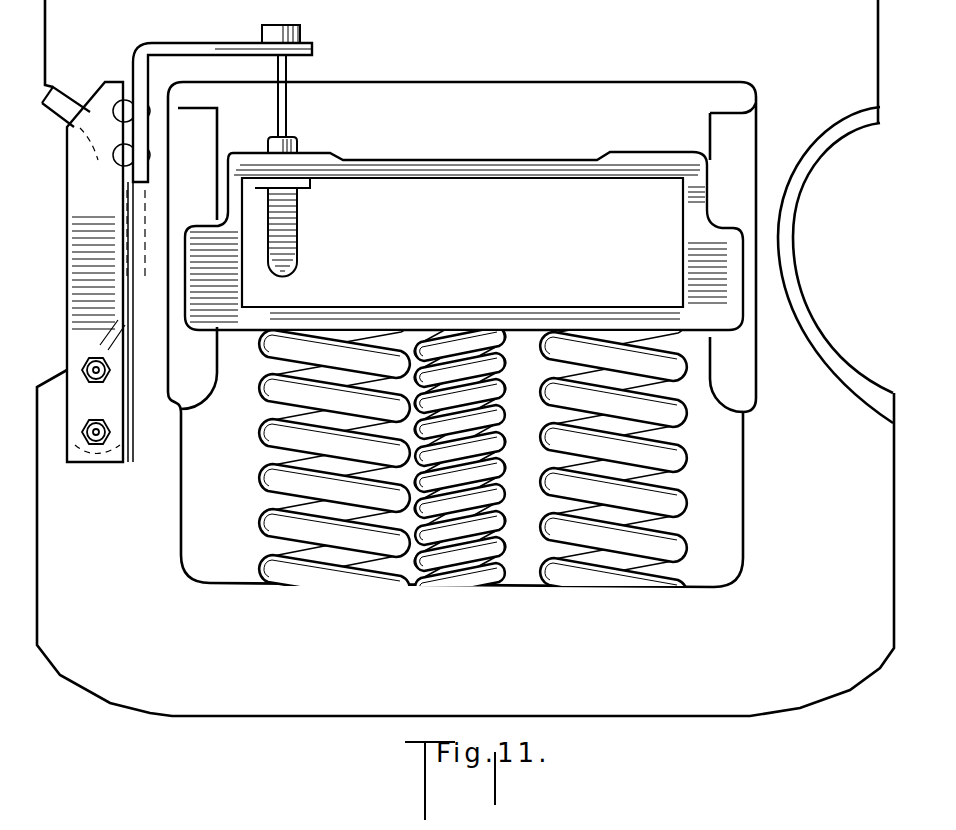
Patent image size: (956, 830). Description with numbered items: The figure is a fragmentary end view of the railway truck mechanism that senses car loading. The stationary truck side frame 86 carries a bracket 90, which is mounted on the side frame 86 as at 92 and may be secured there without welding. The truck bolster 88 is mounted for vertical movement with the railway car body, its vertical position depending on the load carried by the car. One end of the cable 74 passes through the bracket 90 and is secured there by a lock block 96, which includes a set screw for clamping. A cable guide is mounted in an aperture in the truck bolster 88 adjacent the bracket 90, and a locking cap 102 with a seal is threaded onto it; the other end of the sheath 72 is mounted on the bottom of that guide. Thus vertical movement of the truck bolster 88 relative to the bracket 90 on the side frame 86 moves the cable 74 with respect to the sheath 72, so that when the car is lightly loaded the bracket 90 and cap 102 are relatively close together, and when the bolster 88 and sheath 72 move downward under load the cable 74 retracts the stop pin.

The sheath 72 is at (297, 236).
The cable 74 is at (286, 110).
The truck side frame 86 is at (67, 96).
The truck bolster 88 is at (420, 167).
The bracket 90 is at (186, 45).
The bracket mounting location 92 is at (126, 142).
The lock block 96 is at (313, 33).
The locking cap 102 is at (297, 146).